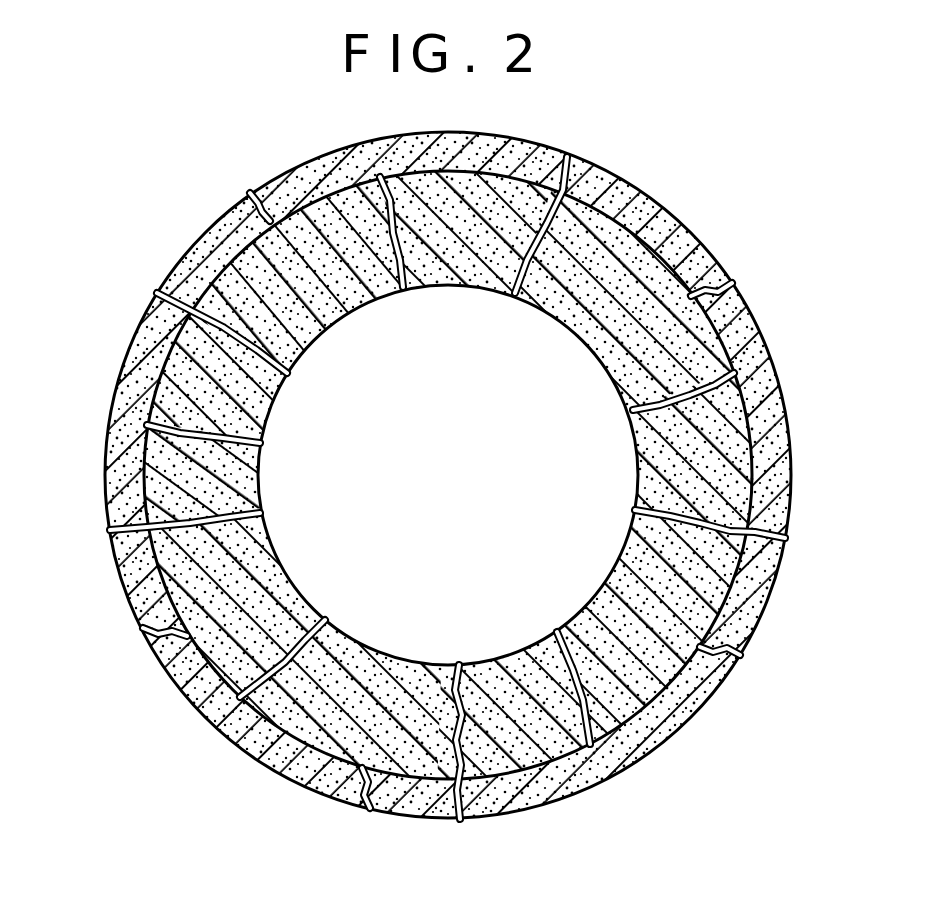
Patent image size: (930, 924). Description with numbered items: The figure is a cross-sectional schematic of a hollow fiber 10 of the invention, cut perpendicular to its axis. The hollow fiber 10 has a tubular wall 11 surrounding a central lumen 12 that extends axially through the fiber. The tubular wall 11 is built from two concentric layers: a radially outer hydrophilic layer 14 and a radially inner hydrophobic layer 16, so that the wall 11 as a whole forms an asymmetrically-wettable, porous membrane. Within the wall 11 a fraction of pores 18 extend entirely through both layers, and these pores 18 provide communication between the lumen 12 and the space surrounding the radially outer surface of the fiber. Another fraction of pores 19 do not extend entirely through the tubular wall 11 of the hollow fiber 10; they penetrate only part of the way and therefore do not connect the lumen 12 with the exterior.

The hollow fiber 10 is at (675, 198).
The tubular wall 11 is at (790, 440).
The lumen 12 is at (456, 466).
The radially outer hydrophilic layer 14 is at (700, 247).
The radially inner hydrophobic layer 16 is at (585, 341).
The pores 18 is at (567, 157).
The pores 19 is at (250, 193).